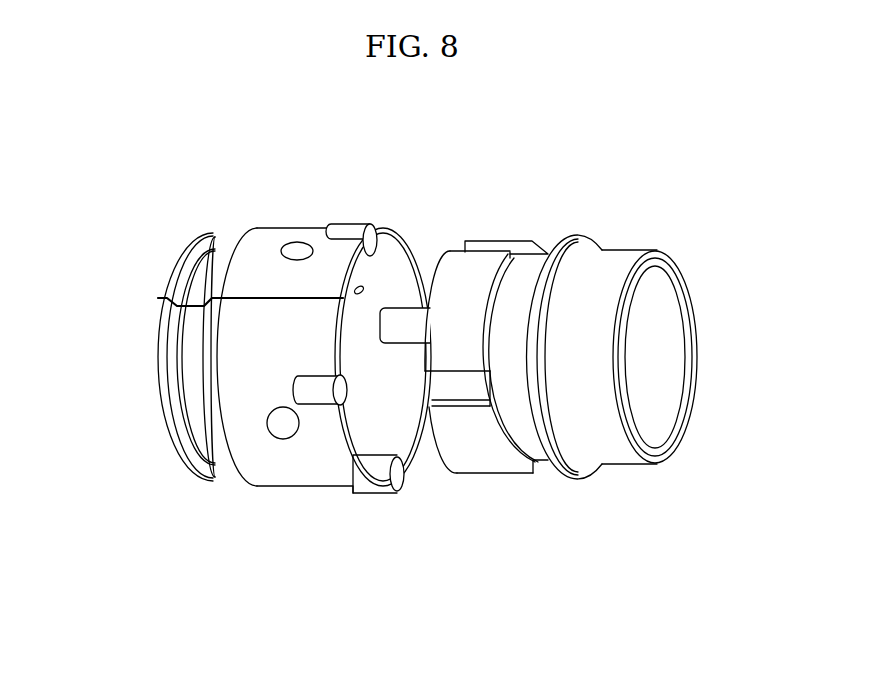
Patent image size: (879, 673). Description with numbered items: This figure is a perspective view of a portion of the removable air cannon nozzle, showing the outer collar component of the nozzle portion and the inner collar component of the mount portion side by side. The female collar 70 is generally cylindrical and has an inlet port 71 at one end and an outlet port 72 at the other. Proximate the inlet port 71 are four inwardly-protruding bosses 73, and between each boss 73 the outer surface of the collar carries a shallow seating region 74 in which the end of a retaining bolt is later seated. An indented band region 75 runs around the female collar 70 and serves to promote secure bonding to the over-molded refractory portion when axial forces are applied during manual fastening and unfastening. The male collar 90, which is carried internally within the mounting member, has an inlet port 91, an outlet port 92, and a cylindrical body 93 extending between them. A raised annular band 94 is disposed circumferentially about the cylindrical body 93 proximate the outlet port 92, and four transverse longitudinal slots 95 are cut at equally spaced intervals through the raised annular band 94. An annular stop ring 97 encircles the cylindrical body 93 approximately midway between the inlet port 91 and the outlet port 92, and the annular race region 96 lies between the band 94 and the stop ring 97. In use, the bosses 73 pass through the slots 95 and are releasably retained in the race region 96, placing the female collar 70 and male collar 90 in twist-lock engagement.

The female collar 70 is at (260, 179).
The inlet port 71 is at (383, 257).
The outlet port 72 is at (162, 405).
The bosses 73 is at (334, 224).
The shallow seating regions 74 is at (298, 253).
The indented band region 75 is at (193, 438).
The male collar 90 is at (597, 179).
The inlet port 91 is at (652, 437).
The outlet port 92 is at (440, 450).
The cylindrical body 93 is at (611, 264).
The raised annular band 94 is at (492, 475).
The transverse longitudinal slots 95 is at (488, 243).
The annular race region 96 is at (523, 268).
The annular stop ring 97 is at (567, 483).